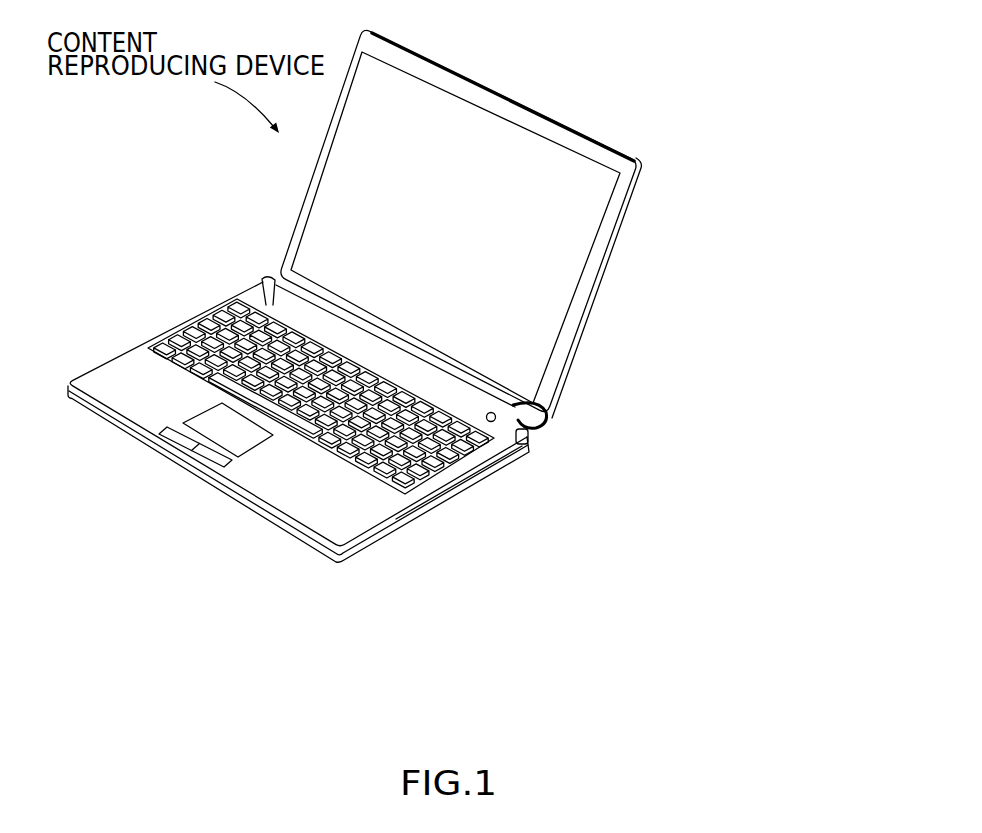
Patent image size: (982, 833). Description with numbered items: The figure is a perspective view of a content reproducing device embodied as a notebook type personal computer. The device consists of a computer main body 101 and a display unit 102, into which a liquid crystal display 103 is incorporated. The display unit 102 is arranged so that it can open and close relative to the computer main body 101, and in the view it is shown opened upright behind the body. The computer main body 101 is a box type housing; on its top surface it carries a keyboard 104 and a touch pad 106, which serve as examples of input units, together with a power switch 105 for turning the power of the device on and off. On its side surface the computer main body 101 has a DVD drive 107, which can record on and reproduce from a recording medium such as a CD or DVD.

The computer main body 101 is at (277, 515).
The display unit 102 is at (582, 298).
The liquid crystal display 103 is at (527, 152).
The keyboard 104 is at (193, 322).
The power switch 105 is at (496, 416).
The touch pad 106 is at (160, 441).
The DVD drive 107 is at (470, 478).